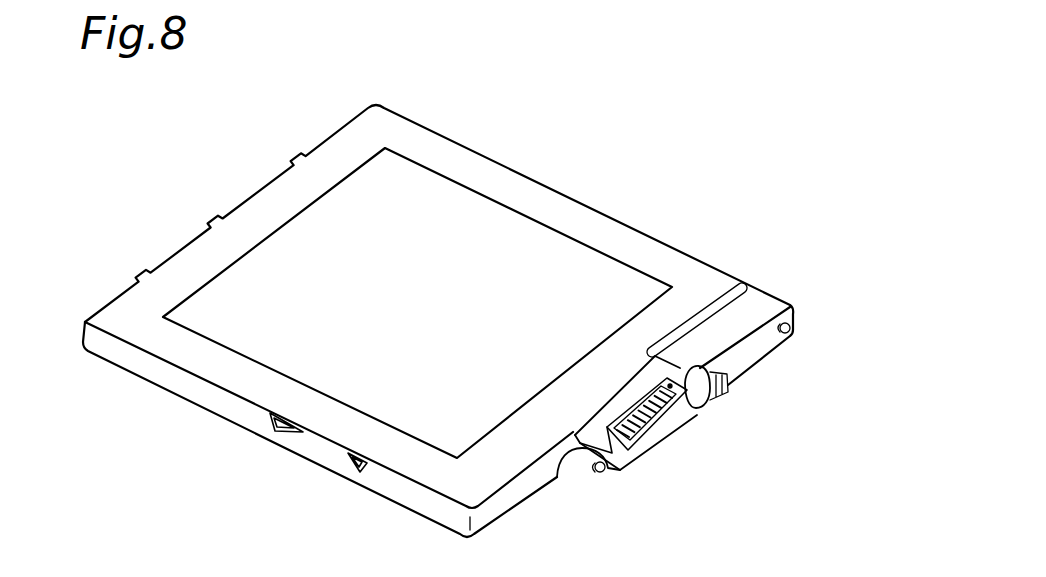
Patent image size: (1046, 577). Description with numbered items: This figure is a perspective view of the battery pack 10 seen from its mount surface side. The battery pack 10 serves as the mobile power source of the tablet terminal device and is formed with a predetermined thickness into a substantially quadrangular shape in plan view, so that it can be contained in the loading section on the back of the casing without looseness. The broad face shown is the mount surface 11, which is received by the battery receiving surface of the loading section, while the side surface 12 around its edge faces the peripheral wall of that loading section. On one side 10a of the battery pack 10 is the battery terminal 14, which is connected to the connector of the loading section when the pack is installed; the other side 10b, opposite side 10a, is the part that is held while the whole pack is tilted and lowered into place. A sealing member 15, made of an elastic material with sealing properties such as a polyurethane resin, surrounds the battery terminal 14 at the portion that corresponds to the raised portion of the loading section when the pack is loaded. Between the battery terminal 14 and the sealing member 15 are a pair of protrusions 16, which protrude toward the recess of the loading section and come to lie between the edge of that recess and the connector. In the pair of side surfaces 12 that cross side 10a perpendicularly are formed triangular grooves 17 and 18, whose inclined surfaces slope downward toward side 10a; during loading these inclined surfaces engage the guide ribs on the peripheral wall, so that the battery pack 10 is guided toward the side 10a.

The battery pack 10 is at (513, 240).
The one side 10a is at (755, 352).
The other side 10b is at (262, 187).
The mount surface 11 is at (407, 183).
The side surface 12 is at (215, 403).
The battery terminal 14 is at (667, 427).
The sealing member 15 is at (630, 397).
The protrusions 16 is at (722, 367).
The triangular groove 17 is at (350, 467).
The triangular groove 18 is at (273, 430).